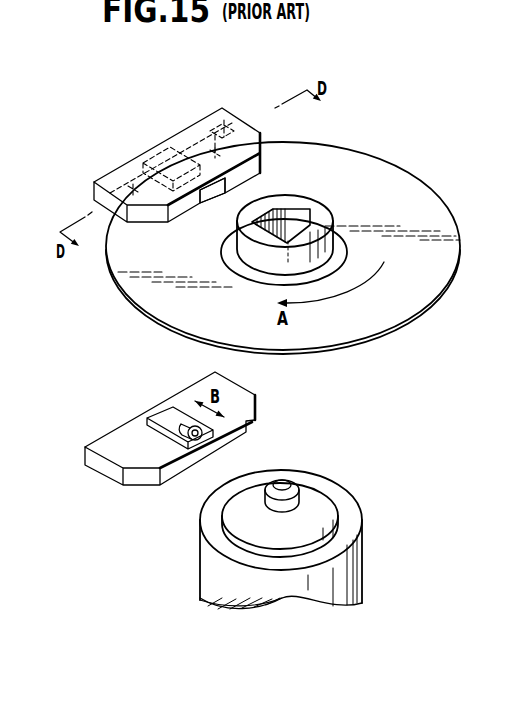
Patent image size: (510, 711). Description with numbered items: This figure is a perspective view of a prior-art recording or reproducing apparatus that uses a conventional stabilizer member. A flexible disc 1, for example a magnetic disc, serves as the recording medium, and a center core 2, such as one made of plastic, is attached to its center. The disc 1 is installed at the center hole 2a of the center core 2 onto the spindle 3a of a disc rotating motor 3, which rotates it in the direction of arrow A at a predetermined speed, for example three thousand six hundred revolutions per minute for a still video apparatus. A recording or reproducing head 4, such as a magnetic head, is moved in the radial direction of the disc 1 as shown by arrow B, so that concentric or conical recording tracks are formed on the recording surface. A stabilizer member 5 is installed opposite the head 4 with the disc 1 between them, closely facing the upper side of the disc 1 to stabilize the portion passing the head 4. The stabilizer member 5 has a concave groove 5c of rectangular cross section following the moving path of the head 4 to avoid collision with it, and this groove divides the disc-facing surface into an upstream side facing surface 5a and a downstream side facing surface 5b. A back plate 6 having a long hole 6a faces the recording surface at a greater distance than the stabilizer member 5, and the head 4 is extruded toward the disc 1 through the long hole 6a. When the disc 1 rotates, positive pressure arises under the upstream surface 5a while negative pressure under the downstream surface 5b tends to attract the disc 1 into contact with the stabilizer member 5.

The flexible disc 1 is at (430, 195).
The center core 2 is at (309, 199).
The center hole 2a is at (303, 215).
The disc rotating motor 3 is at (297, 528).
The spindle 3a is at (303, 503).
The recording or reproducing head 4 is at (196, 440).
The stabilizer member 5 is at (177, 165).
The upstream side facing surface 5a is at (133, 190).
The downstream side facing surface 5b is at (215, 153).
The concave groove 5c is at (213, 194).
The back plate 6 is at (170, 422).
The long hole 6a is at (158, 410).